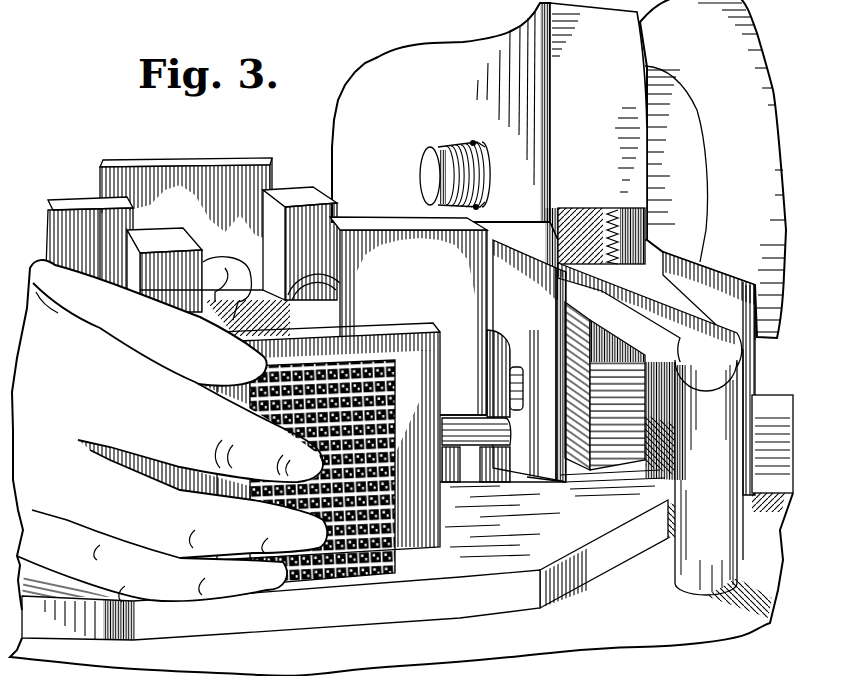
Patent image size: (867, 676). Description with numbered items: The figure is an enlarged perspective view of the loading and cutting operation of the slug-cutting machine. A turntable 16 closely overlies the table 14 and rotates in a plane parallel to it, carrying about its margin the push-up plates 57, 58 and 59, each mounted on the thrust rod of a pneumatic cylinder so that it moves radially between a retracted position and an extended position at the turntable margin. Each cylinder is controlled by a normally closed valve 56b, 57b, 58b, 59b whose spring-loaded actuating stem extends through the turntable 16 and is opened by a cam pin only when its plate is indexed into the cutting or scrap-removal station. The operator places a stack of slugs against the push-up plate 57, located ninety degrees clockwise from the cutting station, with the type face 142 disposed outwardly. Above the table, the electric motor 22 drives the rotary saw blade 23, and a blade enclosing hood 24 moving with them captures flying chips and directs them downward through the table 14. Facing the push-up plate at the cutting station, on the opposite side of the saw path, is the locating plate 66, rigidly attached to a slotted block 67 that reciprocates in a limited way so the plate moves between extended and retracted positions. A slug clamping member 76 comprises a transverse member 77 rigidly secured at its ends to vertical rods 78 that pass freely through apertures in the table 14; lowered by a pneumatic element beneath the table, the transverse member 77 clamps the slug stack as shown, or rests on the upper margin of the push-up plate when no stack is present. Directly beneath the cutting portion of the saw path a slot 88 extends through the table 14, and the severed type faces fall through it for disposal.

The table 14 is at (628, 616).
The turntable 16 is at (467, 598).
The electric motor 22 is at (756, 171).
The rotary saw blade 23 is at (600, 243).
The blade enclosing hood 24 is at (606, 88).
The normally closed valve 56b is at (180, 249).
The push-up plate 57 is at (420, 356).
The normally closed valve 57b is at (437, 280).
The push-up plate 58 is at (500, 440).
The normally closed valve 58b is at (296, 200).
The push-up plate 59 is at (183, 196).
The normally closed valve 59b is at (82, 200).
The locating plate 66 is at (750, 347).
The slotted block 67 is at (770, 478).
The slug clamping member 76 is at (690, 290).
The transverse member 77 is at (660, 311).
The vertical rods 78 is at (716, 514).
The slot 88 is at (637, 472).
The type face 142 is at (390, 433).